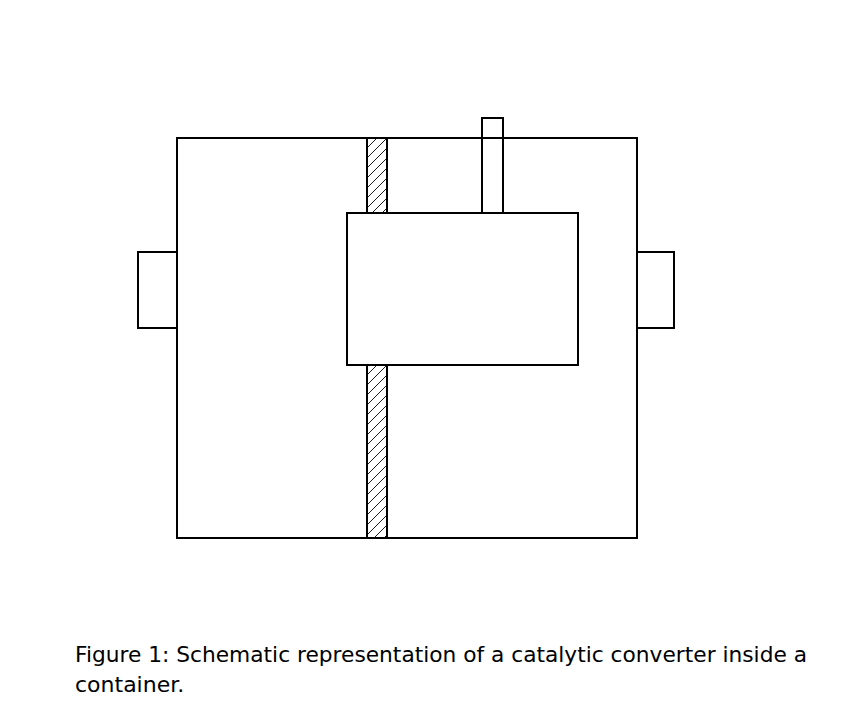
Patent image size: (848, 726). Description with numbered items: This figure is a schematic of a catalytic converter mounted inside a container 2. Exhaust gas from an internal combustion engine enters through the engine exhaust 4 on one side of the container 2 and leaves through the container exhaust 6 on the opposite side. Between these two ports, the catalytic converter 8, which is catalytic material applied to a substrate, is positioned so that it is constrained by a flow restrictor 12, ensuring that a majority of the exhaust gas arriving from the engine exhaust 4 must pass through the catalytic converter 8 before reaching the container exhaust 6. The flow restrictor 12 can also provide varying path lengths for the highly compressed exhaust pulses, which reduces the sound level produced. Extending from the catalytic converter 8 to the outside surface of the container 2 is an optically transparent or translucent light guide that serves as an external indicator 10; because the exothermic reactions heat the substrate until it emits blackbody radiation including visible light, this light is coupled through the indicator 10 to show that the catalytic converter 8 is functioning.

The container 2 is at (407, 338).
The engine exhaust 4 is at (91, 287).
The container exhaust 6 is at (728, 287).
The catalytic converter 8 is at (462, 289).
The external indicator 10 is at (490, 110).
The flow restrictor 12 is at (307, 341).